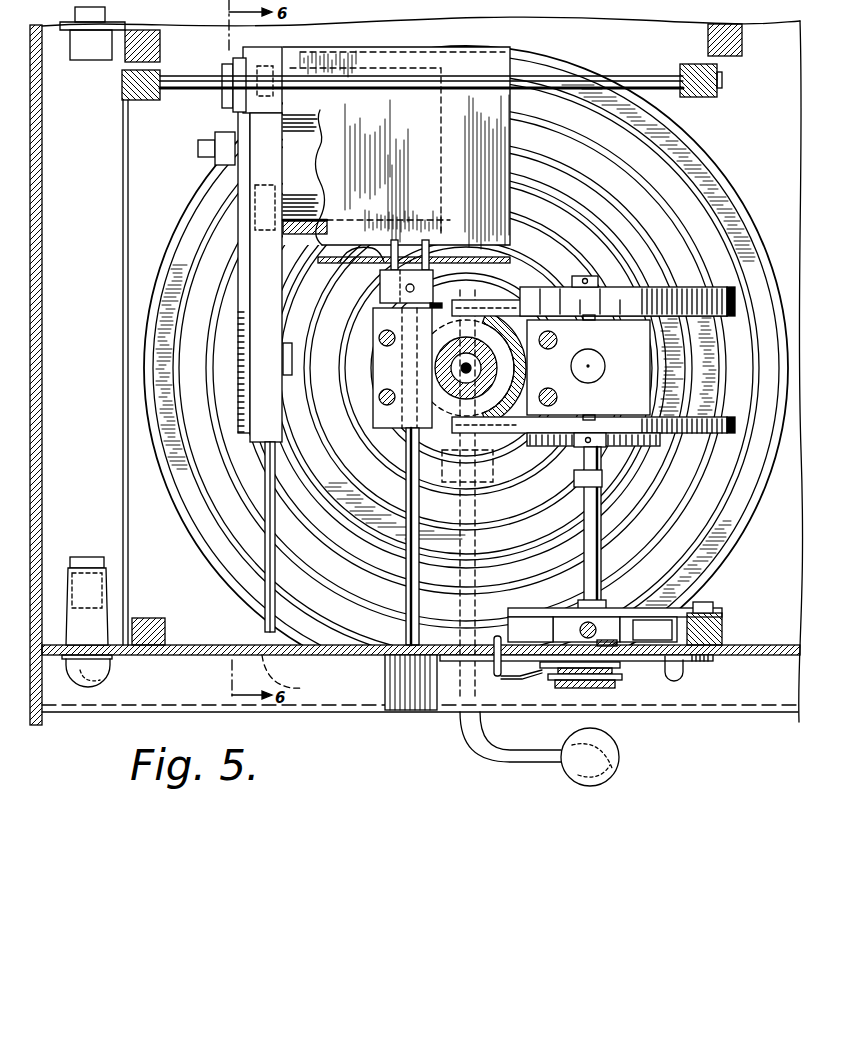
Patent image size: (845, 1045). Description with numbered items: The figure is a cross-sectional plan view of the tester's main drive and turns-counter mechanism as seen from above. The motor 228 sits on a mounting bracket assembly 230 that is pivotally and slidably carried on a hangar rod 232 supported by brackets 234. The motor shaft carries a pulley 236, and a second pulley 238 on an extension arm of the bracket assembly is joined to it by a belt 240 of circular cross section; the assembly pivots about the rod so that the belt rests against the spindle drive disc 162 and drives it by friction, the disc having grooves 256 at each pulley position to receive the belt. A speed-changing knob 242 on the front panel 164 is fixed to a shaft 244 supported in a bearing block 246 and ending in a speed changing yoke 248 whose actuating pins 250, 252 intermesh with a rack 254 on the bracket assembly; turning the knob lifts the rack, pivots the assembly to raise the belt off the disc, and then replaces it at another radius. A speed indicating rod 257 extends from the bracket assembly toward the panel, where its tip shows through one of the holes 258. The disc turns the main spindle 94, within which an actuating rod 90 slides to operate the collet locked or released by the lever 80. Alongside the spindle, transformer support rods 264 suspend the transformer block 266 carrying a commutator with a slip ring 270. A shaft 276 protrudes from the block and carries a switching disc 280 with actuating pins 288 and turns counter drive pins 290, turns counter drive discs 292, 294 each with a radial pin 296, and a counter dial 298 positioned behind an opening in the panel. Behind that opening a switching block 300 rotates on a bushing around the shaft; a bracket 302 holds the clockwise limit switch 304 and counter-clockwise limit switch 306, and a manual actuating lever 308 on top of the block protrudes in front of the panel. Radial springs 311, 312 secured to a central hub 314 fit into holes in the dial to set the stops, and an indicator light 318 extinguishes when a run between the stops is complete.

The lever 80 is at (535, 760).
The actuating rod 90 is at (450, 363).
The spindle 94 is at (458, 369).
The spindle drive disc 162 is at (175, 490).
The front panel 164 is at (192, 652).
The motor 228 is at (300, 225).
The mounting bracket assembly 230 is at (345, 172).
The hangar rod 232 is at (638, 78).
The brackets 234 is at (153, 103).
The pulley 236 is at (238, 118).
The second pulley 238 is at (245, 405).
The belt 240 is at (240, 236).
The knob 242 is at (412, 710).
The shaft 244 is at (405, 545).
The bearing block 246 is at (380, 428).
The speed changing yoke 248 is at (380, 288).
The actuating pin 250 is at (370, 250).
The actuating pin 252 is at (422, 240).
The rack 254 is at (285, 345).
The grooves 256 is at (720, 210).
The speed indicating rod 257 is at (268, 600).
The holes 258 is at (278, 660).
The transformer support rods 264 is at (558, 339).
The transformer block 266 is at (648, 361).
The slip ring 270 is at (648, 298).
The shaft 276 is at (585, 540).
The switching disc 280 is at (705, 440).
The actuating pins 288 is at (740, 290).
The turns counter drive pins 290 is at (563, 447).
The turns counter drive disc 292 is at (605, 232).
The turns counter drive disc 294 is at (640, 433).
The radial pin 296 is at (587, 447).
The counter dial 298 is at (700, 662).
The switching block 300 is at (605, 625).
The bracket 302 is at (655, 625).
The clockwise limit switch 304 is at (705, 613).
The counter-clockwise limit switch 306 is at (520, 618).
The manual actuating lever 308 is at (583, 624).
The radial spring 311 is at (680, 680).
The radial spring 312 is at (512, 685).
The central hub 314 is at (600, 690).
The indicator light 318 is at (85, 675).